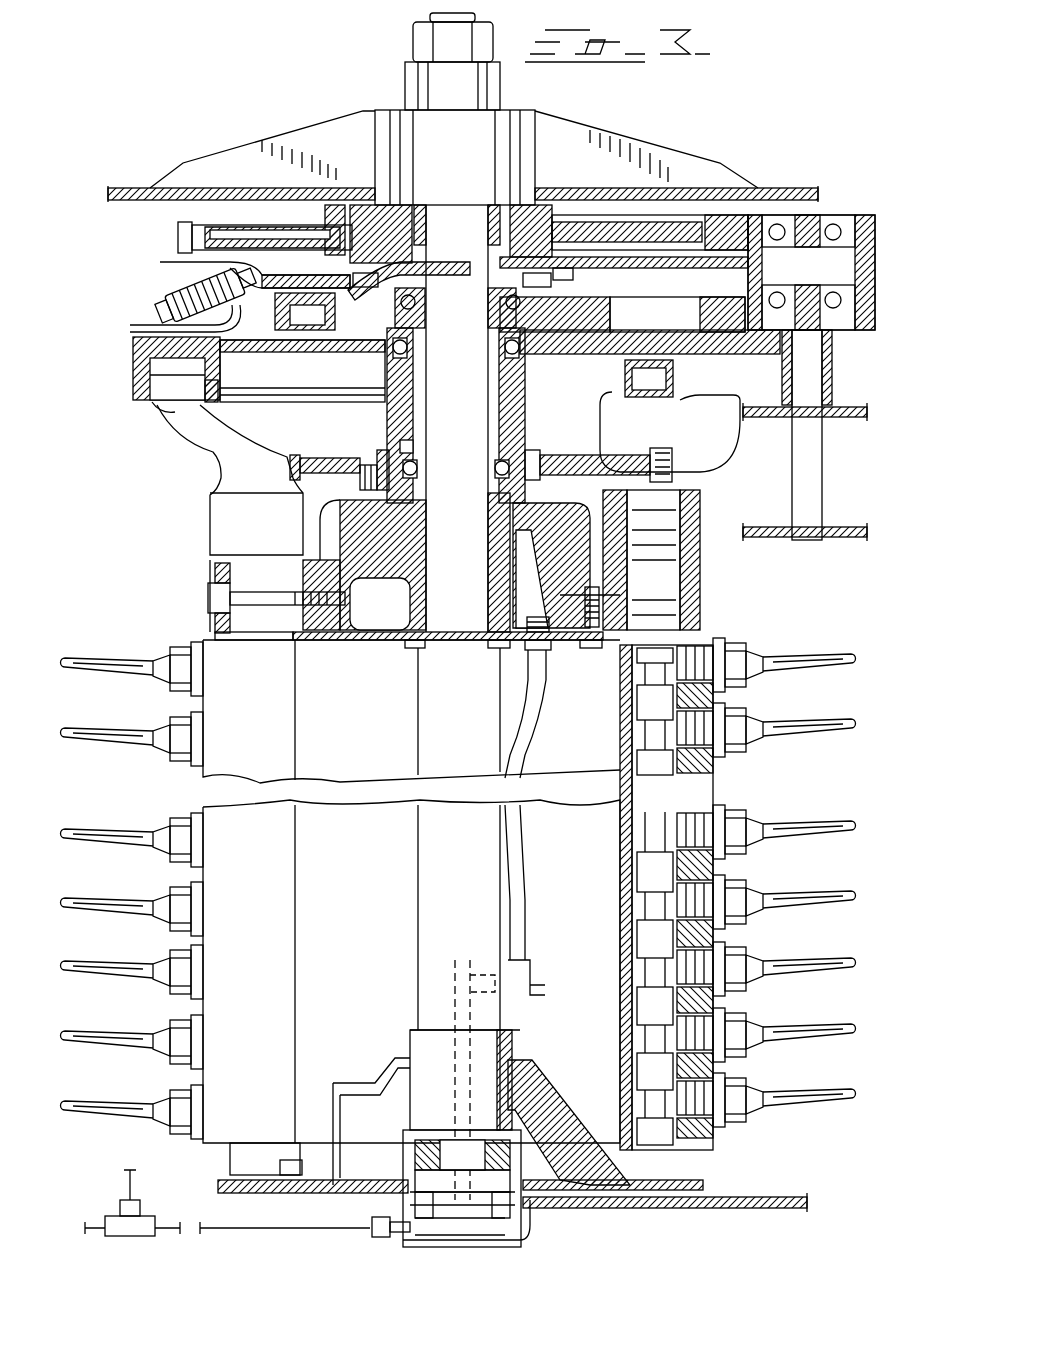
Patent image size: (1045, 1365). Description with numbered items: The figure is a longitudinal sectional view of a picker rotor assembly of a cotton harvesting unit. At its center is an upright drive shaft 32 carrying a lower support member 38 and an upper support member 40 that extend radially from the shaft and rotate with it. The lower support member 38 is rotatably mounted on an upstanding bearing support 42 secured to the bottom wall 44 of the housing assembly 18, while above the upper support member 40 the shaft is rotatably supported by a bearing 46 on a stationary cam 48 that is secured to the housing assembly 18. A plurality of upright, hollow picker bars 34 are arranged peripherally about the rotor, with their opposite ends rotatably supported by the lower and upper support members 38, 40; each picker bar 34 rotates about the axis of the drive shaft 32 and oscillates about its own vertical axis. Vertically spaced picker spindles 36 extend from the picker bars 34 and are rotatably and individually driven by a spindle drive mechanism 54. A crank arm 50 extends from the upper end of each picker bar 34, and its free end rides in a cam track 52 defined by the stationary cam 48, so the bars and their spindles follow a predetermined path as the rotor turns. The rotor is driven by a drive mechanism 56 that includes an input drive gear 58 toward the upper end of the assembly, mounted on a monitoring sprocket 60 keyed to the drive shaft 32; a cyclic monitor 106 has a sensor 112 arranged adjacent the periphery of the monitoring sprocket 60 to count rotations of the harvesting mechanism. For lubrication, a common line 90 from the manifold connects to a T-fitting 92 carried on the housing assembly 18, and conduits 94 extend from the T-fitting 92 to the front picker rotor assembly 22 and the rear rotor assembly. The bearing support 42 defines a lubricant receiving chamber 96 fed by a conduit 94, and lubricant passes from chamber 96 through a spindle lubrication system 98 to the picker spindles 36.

The housing assembly 18 is at (797, 188).
The drive mechanism 56 is at (832, 202).
The input drive gear 58 is at (178, 235).
The monitoring sprocket 60 is at (230, 266).
The cyclic monitor 106 is at (165, 294).
The sensor 112 is at (160, 310).
The stationary cam 48 is at (133, 378).
The cam track 52 is at (158, 407).
The crank arm 50 is at (210, 453).
The bearing 46 is at (385, 365).
The spindle drive mechanism 54 is at (560, 458).
The upper support member 40 is at (355, 530).
The front picker rotor assembly 22 is at (207, 598).
The drive shaft 32 is at (435, 742).
The spindle lubrication system 98 is at (553, 663).
The picker spindles 36 is at (835, 830).
The picker bars 34 is at (275, 914).
The lower support member 38 is at (548, 1100).
The bottom wall 44 is at (660, 1200).
The bearing support 42 is at (518, 1238).
The lubricant receiving chamber 96 is at (440, 1228).
The conduits 94 is at (90, 1222).
The T-fitting 92 is at (135, 1237).
The common line 90 is at (135, 1185).